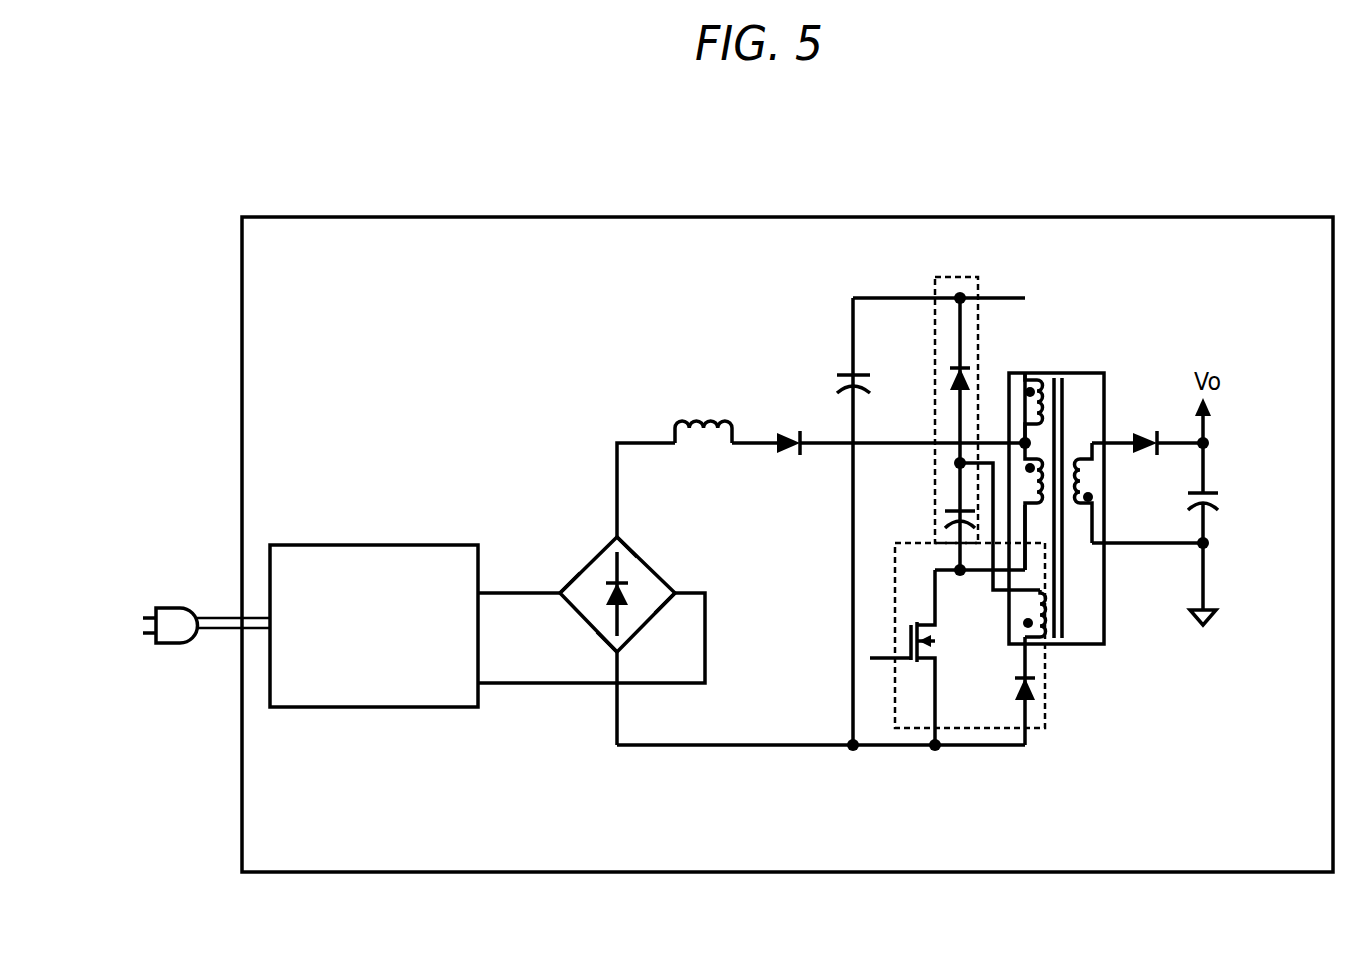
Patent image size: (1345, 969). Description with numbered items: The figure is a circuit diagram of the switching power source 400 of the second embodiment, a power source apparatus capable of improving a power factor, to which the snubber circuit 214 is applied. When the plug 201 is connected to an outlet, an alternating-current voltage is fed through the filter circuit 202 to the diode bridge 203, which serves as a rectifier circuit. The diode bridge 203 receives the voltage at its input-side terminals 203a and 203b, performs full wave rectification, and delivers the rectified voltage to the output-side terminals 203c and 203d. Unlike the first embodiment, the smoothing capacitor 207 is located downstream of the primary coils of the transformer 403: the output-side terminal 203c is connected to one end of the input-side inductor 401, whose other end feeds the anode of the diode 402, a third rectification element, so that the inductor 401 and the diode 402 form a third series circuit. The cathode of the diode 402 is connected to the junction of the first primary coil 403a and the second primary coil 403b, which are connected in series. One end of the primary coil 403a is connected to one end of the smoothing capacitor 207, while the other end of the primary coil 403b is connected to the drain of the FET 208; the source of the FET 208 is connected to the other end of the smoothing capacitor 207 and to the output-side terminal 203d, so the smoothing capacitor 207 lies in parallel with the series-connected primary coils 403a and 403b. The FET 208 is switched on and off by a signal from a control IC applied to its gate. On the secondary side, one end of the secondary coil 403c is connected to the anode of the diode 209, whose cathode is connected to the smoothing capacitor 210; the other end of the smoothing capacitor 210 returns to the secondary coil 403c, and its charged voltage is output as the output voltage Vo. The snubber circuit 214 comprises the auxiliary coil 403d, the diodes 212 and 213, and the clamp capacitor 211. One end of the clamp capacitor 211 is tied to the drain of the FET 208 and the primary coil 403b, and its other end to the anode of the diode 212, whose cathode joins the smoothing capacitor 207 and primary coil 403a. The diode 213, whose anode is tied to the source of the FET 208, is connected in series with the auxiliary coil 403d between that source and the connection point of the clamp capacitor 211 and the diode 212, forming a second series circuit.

The plug 201 is at (185, 645).
The filter circuit 202 is at (407, 708).
The diode bridge 203 is at (655, 567).
The input-side terminal 203a is at (560, 592).
The input-side terminal 203b is at (678, 573).
The output-side terminal 203c is at (618, 536).
The output-side terminal 203d is at (660, 643).
The smoothing capacitor 207 is at (873, 380).
The FET 208 is at (920, 665).
The diode 209 is at (1143, 433).
The smoothing capacitor 210 is at (1222, 500).
The clamp capacitor 211 is at (950, 530).
The diode 212 is at (947, 378).
The diode 213 is at (1035, 707).
The snubber circuit 214 is at (975, 732).
The switching power source 400 is at (722, 216).
The inductor 401 is at (700, 417).
The diode 402 is at (780, 428).
The transformer 403 is at (1097, 650).
The first primary coil 403a is at (1030, 378).
The second primary coil 403b is at (1042, 505).
The secondary coil 403c is at (1077, 462).
The auxiliary coil 403d is at (1047, 617).